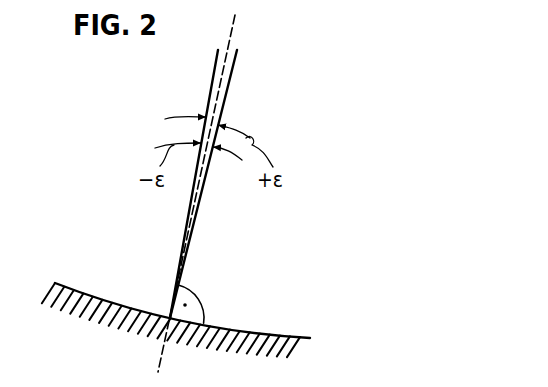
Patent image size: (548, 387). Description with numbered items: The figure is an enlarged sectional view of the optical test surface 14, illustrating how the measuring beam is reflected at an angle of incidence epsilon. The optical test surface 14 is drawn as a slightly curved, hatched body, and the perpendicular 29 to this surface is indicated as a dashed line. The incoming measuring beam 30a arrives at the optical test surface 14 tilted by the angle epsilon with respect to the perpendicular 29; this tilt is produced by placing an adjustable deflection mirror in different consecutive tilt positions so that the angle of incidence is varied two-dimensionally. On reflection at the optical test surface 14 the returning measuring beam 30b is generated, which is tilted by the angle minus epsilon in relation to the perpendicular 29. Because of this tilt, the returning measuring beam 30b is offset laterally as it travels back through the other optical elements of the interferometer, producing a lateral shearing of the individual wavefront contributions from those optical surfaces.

The perpendicular 29 is at (232, 33).
The incoming measuring beam 30a is at (226, 93).
The returning measuring beam 30b is at (210, 95).
The optical test surface 14 is at (258, 333).